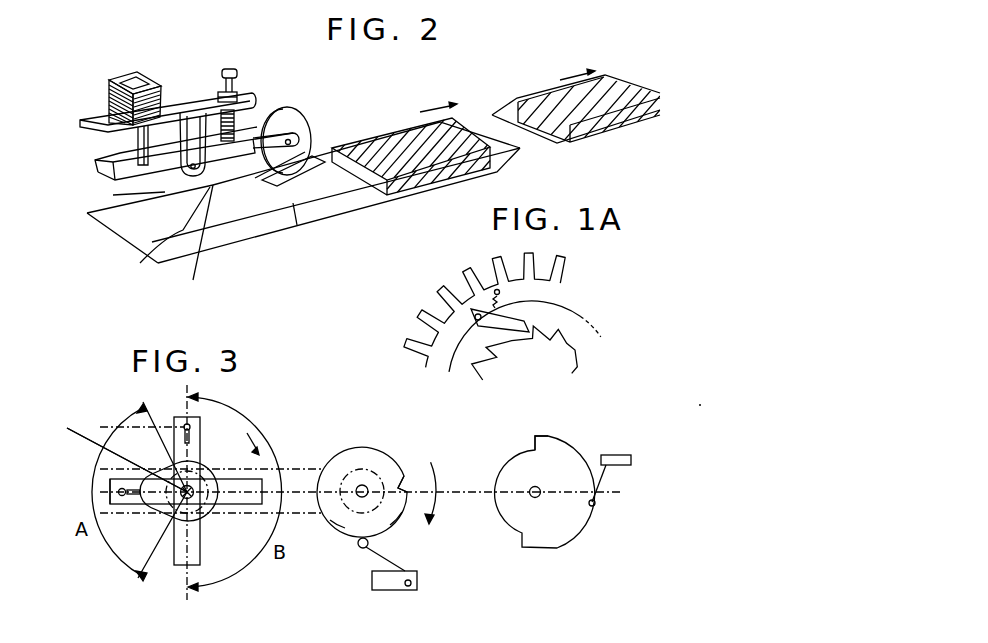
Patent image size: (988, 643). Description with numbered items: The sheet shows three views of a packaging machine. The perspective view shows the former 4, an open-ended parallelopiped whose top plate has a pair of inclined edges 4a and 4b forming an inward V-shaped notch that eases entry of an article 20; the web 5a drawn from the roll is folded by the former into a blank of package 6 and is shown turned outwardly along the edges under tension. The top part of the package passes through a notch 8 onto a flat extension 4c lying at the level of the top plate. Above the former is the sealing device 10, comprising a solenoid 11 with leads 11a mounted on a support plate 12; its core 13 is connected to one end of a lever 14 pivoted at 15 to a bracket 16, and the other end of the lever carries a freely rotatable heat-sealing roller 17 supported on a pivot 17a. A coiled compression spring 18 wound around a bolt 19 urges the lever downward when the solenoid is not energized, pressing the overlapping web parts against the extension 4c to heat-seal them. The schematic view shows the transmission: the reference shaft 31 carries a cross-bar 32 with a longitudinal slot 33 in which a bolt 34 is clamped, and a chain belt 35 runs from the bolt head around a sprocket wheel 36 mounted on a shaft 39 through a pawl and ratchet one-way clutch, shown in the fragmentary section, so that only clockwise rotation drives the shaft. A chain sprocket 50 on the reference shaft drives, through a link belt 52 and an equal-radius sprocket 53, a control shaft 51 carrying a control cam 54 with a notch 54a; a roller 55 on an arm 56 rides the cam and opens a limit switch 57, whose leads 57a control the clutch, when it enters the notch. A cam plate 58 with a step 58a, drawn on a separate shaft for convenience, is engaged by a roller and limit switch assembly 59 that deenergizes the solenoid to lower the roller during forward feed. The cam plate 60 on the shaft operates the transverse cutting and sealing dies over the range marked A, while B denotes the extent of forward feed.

In FIG. 2, the former 4 is at (118, 241).
In FIG. 2, the inclined edge 4a is at (117, 194).
In FIG. 2, the inclined edge 4b is at (142, 262).
In FIG. 2, the flat extension 4c is at (366, 186).
In FIG. 2, the web 5a is at (177, 264).
In FIG. 2, the blank of package 6 is at (341, 203).
In FIG. 2, the notch 8 is at (287, 190).
In FIG. 2, the sealing device 10 is at (129, 47).
In FIG. 2, the solenoid 11 is at (108, 105).
In FIG. 2, the leads 11a is at (110, 84).
In FIG. 2, the support plate 12 is at (195, 103).
In FIG. 2, the core 13 is at (133, 148).
In FIG. 2, the lever 14 is at (100, 172).
In FIG. 2, the pivot 15 is at (181, 115).
In FIG. 2, the bracket 16 is at (202, 128).
In FIG. 2, the heat-sealing roller 17 is at (287, 118).
In FIG. 2, the pivot 17a is at (291, 139).
In FIG. 2, the coiled compression spring 18 is at (235, 112).
In FIG. 2, the bolt 19 is at (235, 72).
In FIG. 2, the article 20 is at (368, 143).
In FIG. 2, the transmission or reference shaft 31 is at (325, 162).
In FIG. 3, the transmission or reference shaft 31 is at (191, 489).
In FIG. 3, the cross-bar 32 is at (200, 518).
In FIG. 3, the longitudinal slot 33 is at (110, 489).
In FIG. 3, the bolt 34 is at (192, 427).
In FIG. 3, the chain belt 35 is at (110, 427).
In FIG. 1A, the sprocket wheel 36 is at (437, 298).
In FIG. 1A, the shaft 39 is at (553, 368).
In FIG. 3, the chain sprocket 50 is at (166, 512).
In FIG. 3, the control shaft 51 is at (367, 486).
In FIG. 3, the link belt 52 is at (316, 470).
In FIG. 3, the sprocket 53 is at (397, 524).
In FIG. 3, the control cam 54 is at (340, 518).
In FIG. 3, the notch 54a is at (408, 480).
In FIG. 3, the roller 55 is at (358, 546).
In FIG. 3, the arm 56 is at (374, 557).
In FIG. 3, the limit switch 57 is at (388, 588).
In FIG. 3, the leads 57a is at (412, 591).
In FIG. 3, the cam plate 58 is at (541, 547).
In FIG. 3, the step 58a is at (533, 441).
In FIG. 3, the roller and limit switch assembly 59 is at (605, 478).
In FIG. 3, the cam plate 60 is at (152, 497).